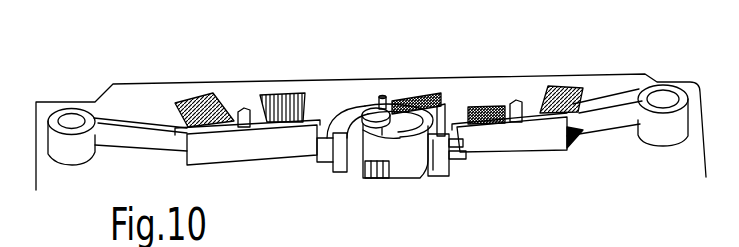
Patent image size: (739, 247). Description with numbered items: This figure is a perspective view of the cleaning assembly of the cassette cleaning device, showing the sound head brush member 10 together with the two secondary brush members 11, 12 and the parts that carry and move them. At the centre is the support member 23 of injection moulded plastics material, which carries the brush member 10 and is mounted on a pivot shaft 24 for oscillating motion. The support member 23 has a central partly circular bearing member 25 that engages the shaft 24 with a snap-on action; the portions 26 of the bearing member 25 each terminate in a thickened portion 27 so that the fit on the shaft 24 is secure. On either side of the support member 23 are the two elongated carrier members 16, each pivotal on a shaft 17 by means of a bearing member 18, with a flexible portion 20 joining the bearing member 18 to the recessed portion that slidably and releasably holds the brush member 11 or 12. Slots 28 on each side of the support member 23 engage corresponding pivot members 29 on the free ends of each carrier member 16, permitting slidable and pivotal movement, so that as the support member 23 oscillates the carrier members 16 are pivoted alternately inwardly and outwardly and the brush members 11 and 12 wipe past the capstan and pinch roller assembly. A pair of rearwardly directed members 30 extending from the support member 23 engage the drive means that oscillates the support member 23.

The brush member 10 is at (430, 100).
The brush member 11 is at (272, 105).
The brush member 12 is at (205, 115).
The carrier member 16 is at (250, 153).
The shaft 17 is at (71, 121).
The bearing member 18 is at (70, 147).
The flexible portion 20 is at (130, 138).
The support member 23 is at (453, 150).
The pivot shaft 24 is at (382, 106).
The bearing member 25 is at (353, 112).
The portions 26 is at (412, 160).
The thickened portion 27 is at (352, 136).
The slots 28 is at (453, 143).
The pivot members 29 is at (456, 153).
The rearwardly directed members 30 is at (331, 174).